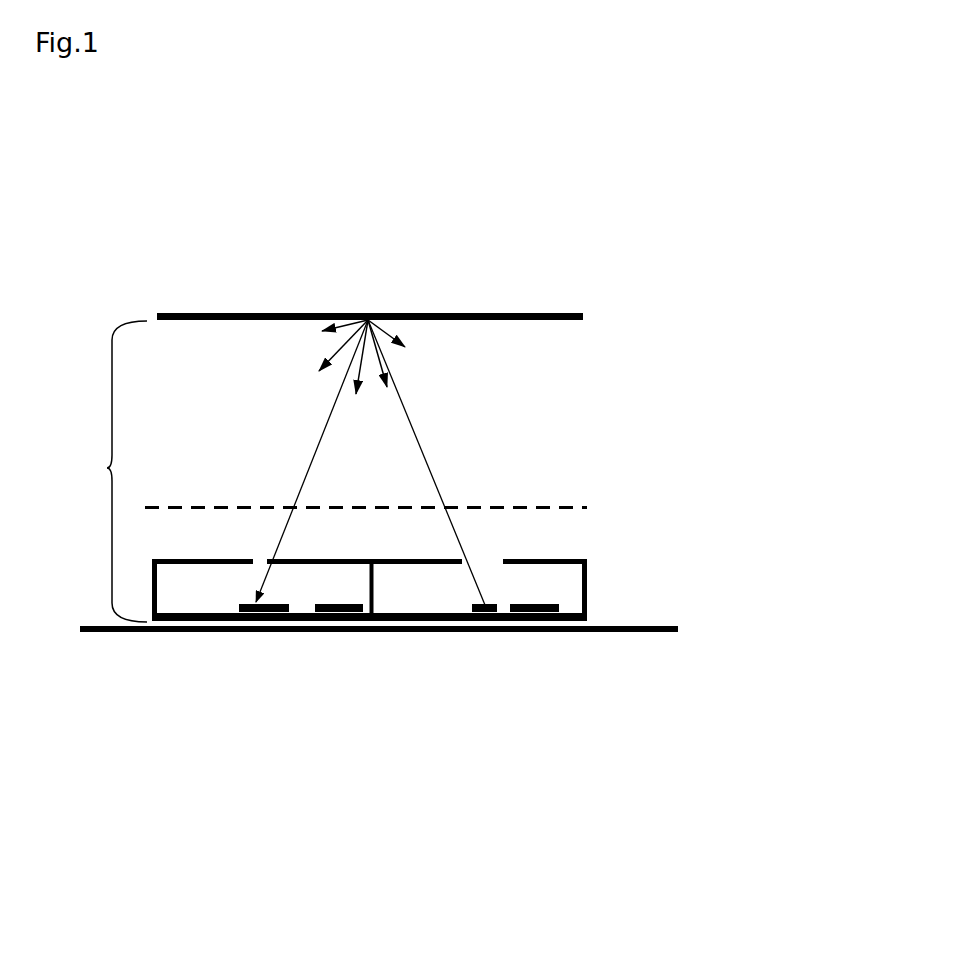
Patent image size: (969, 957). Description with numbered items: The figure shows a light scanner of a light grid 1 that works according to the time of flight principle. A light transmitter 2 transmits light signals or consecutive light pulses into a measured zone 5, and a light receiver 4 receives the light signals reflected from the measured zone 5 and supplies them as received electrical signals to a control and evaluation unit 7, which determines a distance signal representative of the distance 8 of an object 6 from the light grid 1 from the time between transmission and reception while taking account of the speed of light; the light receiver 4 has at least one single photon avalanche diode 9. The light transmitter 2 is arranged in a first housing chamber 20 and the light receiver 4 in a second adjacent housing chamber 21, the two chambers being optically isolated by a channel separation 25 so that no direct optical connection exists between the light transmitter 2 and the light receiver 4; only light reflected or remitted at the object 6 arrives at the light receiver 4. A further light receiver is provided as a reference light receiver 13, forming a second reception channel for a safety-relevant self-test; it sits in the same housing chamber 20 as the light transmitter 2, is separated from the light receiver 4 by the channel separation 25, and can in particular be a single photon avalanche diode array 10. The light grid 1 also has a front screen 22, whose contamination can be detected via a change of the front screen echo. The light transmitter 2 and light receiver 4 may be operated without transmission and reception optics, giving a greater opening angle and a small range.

The light grid 1 is at (467, 722).
The light transmitter 2 is at (490, 605).
The light receiver 4 is at (289, 603).
The measured zone 5 is at (244, 231).
The object 6 is at (514, 311).
The control and evaluation unit 7 is at (334, 604).
The distance 8 is at (107, 468).
The single photon avalanche diode 9 is at (246, 602).
The single photon avalanche diode array 10 is at (268, 600).
The reference light receiver 13 is at (529, 605).
The first housing chamber 20 is at (563, 542).
The second housing chamber 21 is at (189, 542).
The front screen 22 is at (533, 507).
The channel separation 25 is at (374, 595).